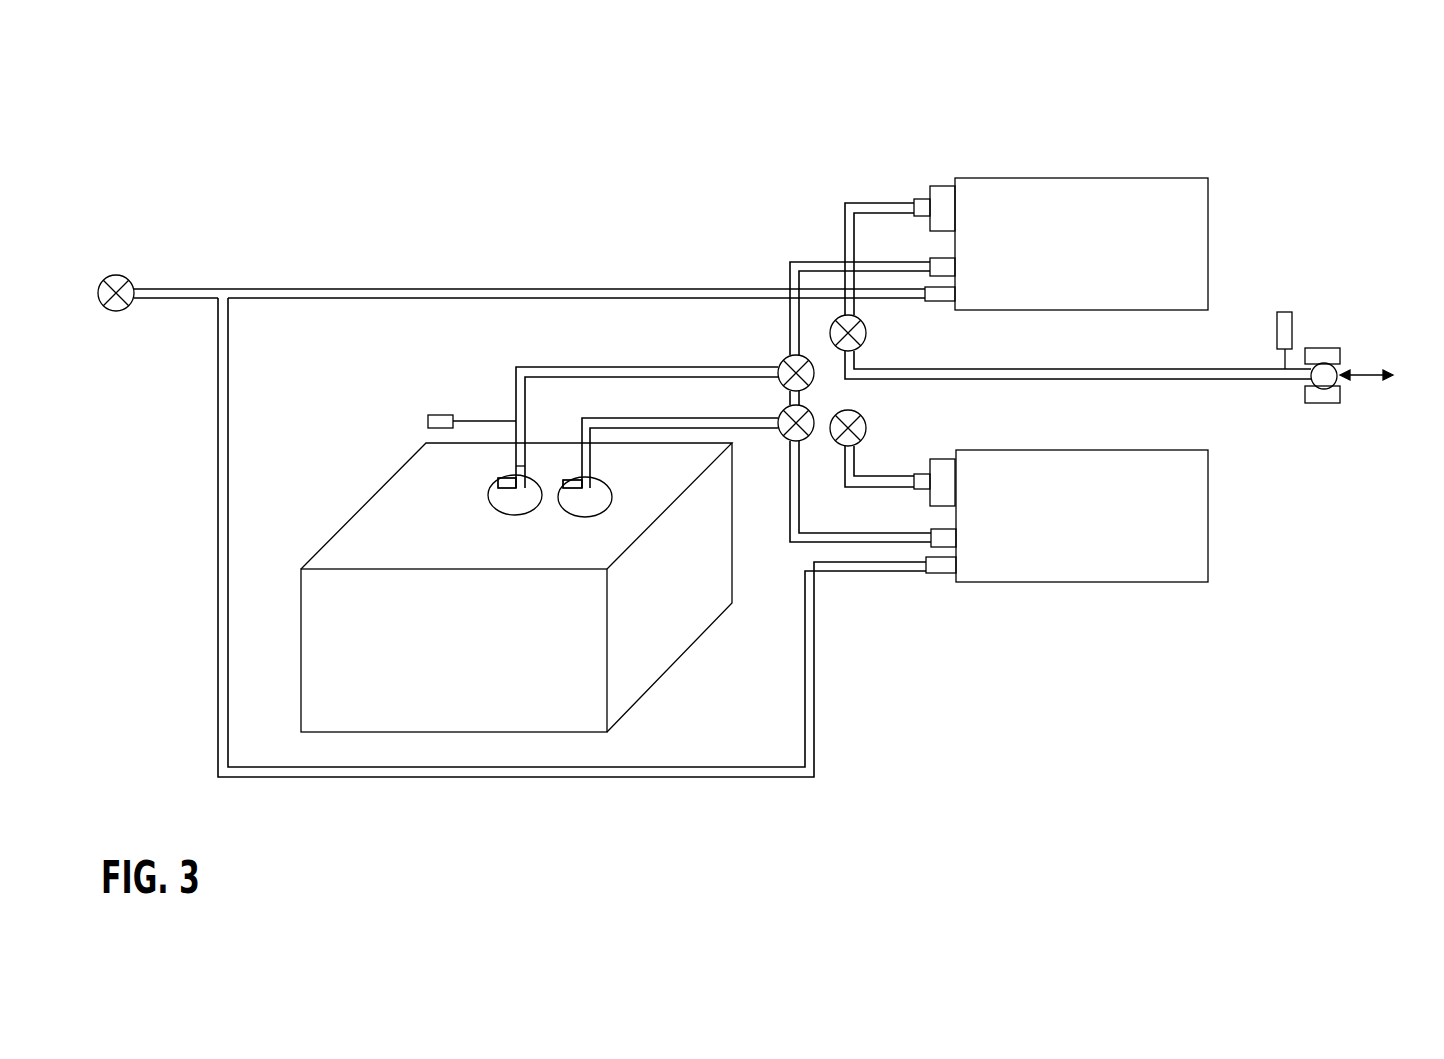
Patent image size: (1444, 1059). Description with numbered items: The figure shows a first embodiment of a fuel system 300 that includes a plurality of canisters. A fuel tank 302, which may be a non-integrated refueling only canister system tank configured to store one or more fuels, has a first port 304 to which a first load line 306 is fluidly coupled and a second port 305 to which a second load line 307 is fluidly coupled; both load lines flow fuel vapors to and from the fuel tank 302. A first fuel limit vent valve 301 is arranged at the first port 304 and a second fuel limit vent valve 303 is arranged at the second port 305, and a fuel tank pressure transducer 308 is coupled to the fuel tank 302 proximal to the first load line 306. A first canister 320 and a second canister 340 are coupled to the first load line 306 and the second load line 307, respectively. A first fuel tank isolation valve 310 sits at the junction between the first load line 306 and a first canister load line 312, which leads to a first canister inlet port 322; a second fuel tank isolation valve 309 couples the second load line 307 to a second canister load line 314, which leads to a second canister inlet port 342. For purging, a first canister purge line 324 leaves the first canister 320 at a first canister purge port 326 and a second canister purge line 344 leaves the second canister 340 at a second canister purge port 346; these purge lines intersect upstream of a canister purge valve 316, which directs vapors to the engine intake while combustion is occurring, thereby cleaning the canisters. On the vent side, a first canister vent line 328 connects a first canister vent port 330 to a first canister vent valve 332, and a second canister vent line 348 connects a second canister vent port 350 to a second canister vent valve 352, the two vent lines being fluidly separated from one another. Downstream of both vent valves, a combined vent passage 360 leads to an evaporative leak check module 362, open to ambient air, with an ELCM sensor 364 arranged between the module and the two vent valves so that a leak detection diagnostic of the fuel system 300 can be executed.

The fuel system 300 is at (1297, 59).
The first fuel limit vent valve 301 is at (492, 488).
The fuel tank 302 is at (350, 522).
The second fuel limit vent valve 303 is at (563, 484).
The first port 304 is at (530, 507).
The second port 305 is at (601, 509).
The first load line 306 is at (600, 367).
The second load line 307 is at (590, 418).
The fuel tank pressure transducer 308 is at (430, 415).
The second fuel tank isolation valve 309 is at (780, 412).
The first fuel tank isolation valve 310 is at (788, 360).
The first canister load line 312 is at (790, 262).
The second canister load line 314 is at (790, 544).
The canister purge valve 316 is at (112, 276).
The first canister 320 is at (1130, 178).
The first canister inlet port 322 is at (957, 266).
The first canister purge line 324 is at (455, 289).
The first canister purge port 326 is at (957, 296).
The first canister vent line 328 is at (845, 203).
The first canister vent port 330 is at (932, 186).
The first canister vent valve 332 is at (867, 333).
The second canister 340 is at (1140, 450).
The second canister inlet port 342 is at (957, 540).
The second canister purge line 344 is at (218, 606).
The second canister purge port 346 is at (957, 565).
The second canister vent line 348 is at (866, 490).
The second canister vent port 350 is at (936, 459).
The second canister vent valve 352 is at (867, 428).
The combined vent passage 360 is at (1120, 369).
The evaporative leak check module 362 is at (1340, 348).
The ELCM sensor 364 is at (1292, 312).